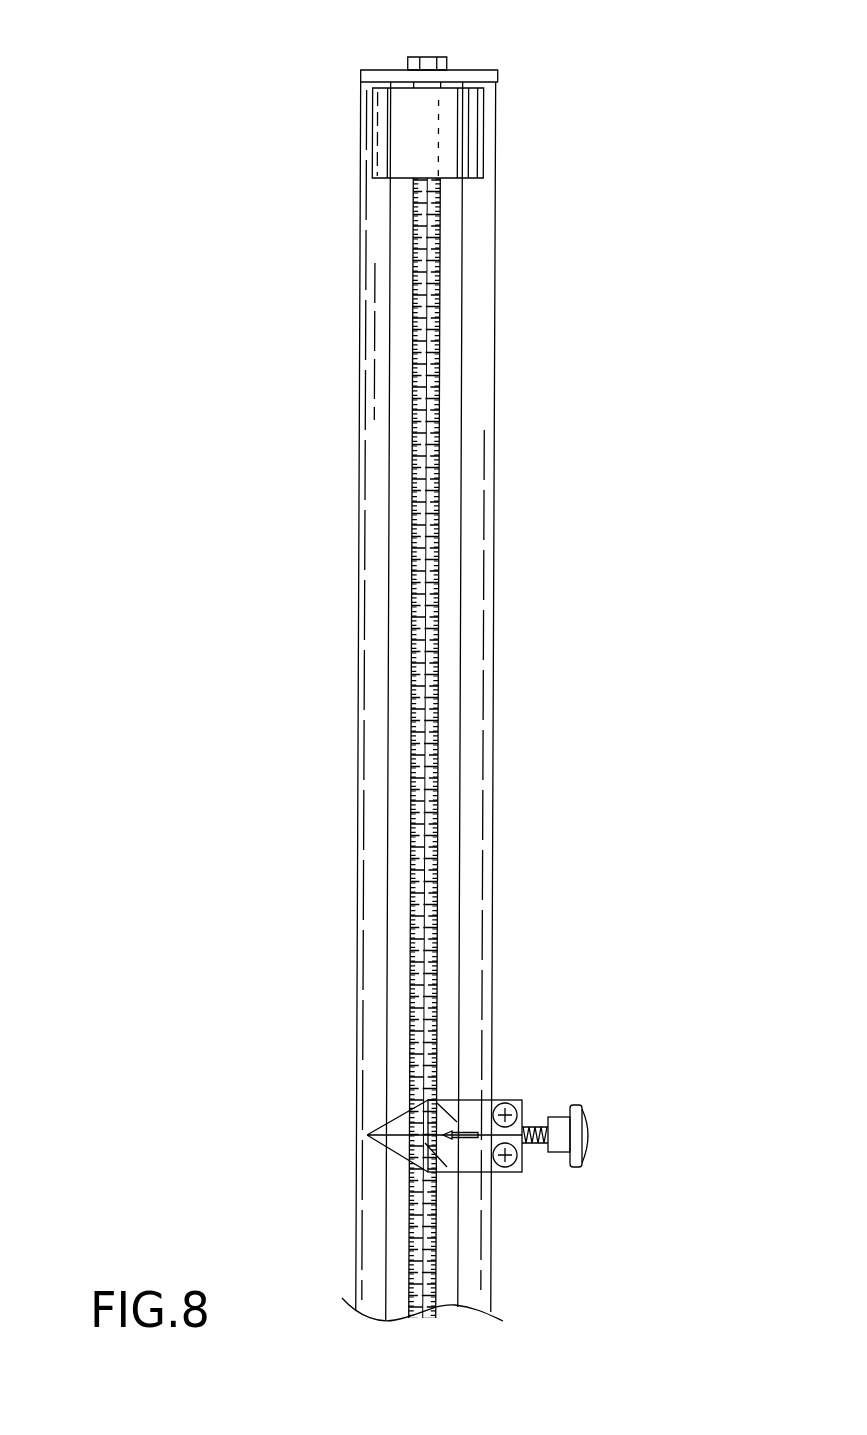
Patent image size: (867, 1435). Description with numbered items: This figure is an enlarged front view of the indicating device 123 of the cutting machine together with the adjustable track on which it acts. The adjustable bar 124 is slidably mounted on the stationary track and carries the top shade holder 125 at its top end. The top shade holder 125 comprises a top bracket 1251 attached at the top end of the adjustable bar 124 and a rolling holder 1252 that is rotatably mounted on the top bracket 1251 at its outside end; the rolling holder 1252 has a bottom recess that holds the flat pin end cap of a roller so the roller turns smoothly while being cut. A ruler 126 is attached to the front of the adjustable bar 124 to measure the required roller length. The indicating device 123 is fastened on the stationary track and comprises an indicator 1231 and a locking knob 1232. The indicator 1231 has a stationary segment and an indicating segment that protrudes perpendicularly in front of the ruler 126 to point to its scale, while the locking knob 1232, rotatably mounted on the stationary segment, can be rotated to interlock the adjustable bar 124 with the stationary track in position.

The indicating device 123 is at (542, 1126).
The indicator 1231 is at (472, 1160).
The locking knob 1232 is at (573, 1137).
The adjustable bar 124 is at (475, 662).
The top shade holder 125 is at (403, 97).
The top bracket 1251 is at (468, 77).
The rolling holder 1252 is at (383, 135).
The ruler 126 is at (428, 818).